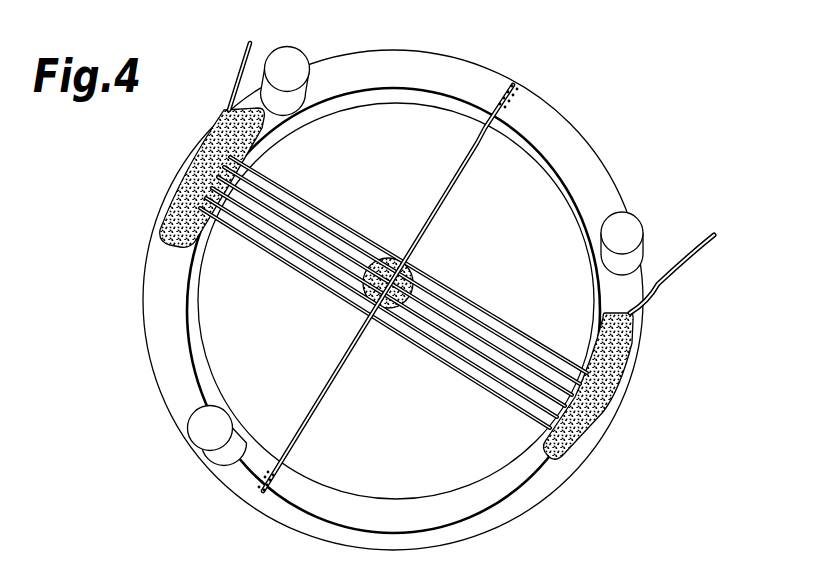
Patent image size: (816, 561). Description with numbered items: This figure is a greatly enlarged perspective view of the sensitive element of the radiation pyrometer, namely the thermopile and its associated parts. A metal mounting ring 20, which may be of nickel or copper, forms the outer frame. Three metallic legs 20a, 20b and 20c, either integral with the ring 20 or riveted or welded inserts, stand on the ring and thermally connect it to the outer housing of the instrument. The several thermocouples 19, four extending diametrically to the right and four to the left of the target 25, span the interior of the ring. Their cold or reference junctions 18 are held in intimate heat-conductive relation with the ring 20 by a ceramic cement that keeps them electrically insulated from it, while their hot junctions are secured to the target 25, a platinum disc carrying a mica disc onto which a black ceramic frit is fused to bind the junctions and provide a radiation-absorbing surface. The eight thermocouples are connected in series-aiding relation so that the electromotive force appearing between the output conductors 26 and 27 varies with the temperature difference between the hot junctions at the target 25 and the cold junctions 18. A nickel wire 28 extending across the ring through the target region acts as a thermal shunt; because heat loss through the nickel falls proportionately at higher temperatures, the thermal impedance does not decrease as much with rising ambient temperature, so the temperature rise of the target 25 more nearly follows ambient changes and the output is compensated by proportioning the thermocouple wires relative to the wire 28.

The cold junctions 18 is at (202, 155).
The thermocouples 19 is at (322, 263).
The metal mounting ring 20 is at (585, 148).
The metallic leg 20a is at (207, 432).
The metallic leg 20b is at (626, 226).
The metallic leg 20c is at (296, 60).
The target 25 is at (393, 258).
The output conductor 26 is at (238, 62).
The output conductor 27 is at (688, 267).
The nickel wire 28 is at (457, 192).